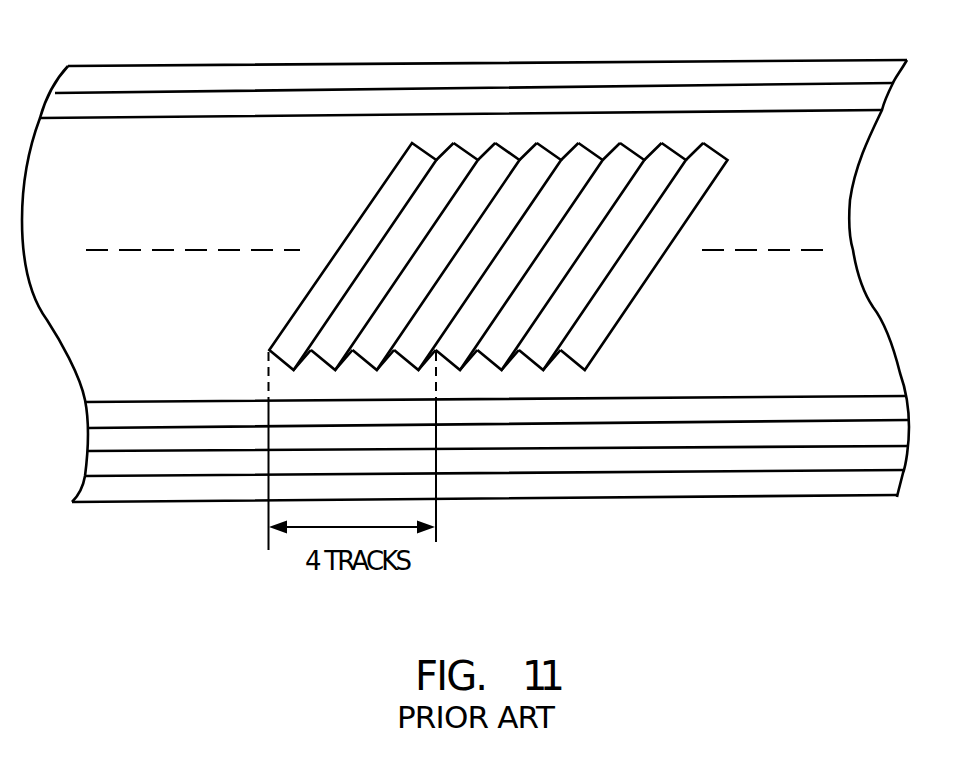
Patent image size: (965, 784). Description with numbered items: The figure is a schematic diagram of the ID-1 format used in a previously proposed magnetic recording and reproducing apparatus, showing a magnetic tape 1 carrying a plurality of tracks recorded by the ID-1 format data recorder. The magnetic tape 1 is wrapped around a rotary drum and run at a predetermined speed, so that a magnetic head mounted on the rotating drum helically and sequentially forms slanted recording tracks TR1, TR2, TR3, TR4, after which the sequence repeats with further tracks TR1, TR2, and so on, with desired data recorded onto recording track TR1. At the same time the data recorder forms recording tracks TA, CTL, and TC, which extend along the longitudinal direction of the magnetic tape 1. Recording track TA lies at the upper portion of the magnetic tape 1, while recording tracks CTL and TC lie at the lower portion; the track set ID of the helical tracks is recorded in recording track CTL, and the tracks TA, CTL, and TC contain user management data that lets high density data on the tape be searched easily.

The magnetic tape 1 is at (838, 216).
The recording track TA is at (863, 102).
The recording track CTL is at (716, 404).
The recording track TC is at (718, 457).
The recording track TR1 is at (419, 148).
The recording track TR2 is at (465, 152).
The recording track TR3 is at (512, 154).
The recording track TR4 is at (553, 153).